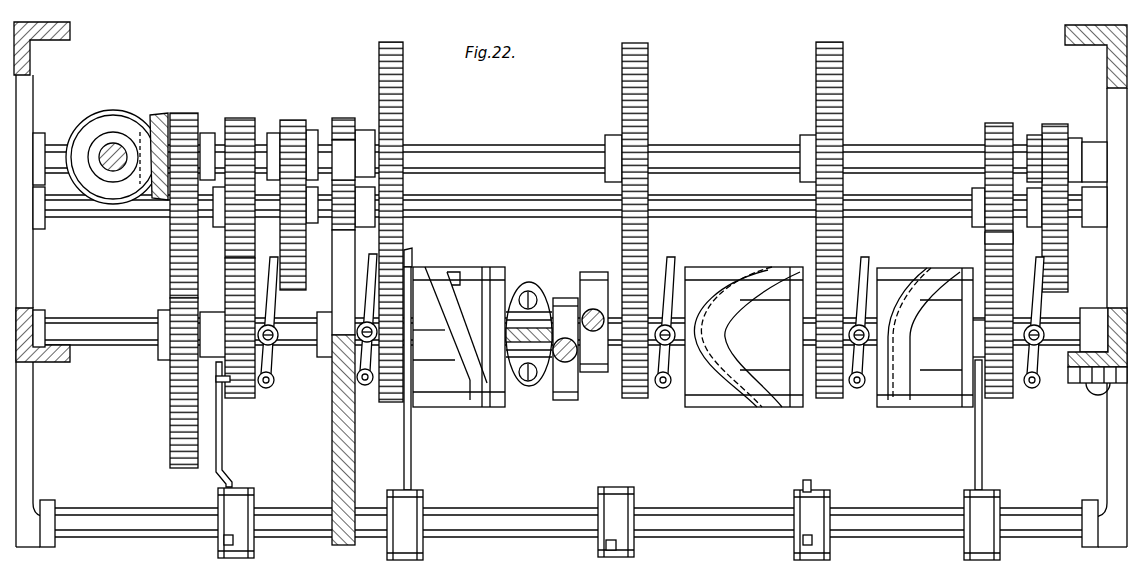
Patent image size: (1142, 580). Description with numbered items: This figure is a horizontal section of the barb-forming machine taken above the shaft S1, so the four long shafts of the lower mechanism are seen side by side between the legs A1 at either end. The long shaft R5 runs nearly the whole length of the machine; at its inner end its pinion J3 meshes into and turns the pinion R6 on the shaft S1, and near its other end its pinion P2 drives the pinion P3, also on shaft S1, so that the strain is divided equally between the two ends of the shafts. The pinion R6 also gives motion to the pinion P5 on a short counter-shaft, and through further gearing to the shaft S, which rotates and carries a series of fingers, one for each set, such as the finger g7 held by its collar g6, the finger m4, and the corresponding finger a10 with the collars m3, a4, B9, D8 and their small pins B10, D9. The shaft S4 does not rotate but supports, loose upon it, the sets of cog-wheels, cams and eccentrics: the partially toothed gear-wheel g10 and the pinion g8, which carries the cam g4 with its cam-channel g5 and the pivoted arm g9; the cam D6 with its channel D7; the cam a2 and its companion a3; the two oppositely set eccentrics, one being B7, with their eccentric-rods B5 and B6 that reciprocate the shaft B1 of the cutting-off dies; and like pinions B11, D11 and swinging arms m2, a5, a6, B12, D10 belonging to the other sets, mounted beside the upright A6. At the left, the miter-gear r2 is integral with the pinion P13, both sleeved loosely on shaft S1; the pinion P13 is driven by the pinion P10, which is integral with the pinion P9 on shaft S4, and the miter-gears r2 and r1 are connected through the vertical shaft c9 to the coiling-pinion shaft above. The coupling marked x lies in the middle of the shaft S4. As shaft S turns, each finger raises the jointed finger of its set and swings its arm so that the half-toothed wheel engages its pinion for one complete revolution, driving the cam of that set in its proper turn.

The legs A1 is at (72, 42).
The shaft R5 is at (50, 135).
The vertical shaft c9 is at (113, 150).
The miter-gear r1 is at (109, 171).
The miter-gear r2 is at (165, 122).
The pinion P13 is at (200, 118).
The pinion P10 is at (170, 378).
The pinion P5 is at (226, 242).
The pinion P9 is at (226, 300).
The pinion J3 is at (292, 120).
The pinion R6 is at (335, 125).
The frame post A6 is at (320, 405).
The shaft S1 is at (502, 218).
The shaft S4 is at (108, 326).
The shaft S is at (123, 516).
The gear B11 is at (632, 400).
The gear D11 is at (826, 400).
The pinion g8 is at (1005, 400).
The pinion P3 is at (1060, 124).
The pinion P2 is at (1033, 135).
The gear-wheel g10 is at (985, 242).
The cam a2 is at (459, 337).
The cam a3 is at (462, 365).
The section line x is at (534, 388).
The shaft B1 is at (565, 402).
The eccentric-rod B6 is at (567, 274).
The eccentric B7 is at (593, 372).
The eccentric-rod B5 is at (597, 267).
The channel D7 is at (744, 337).
The cam D6 is at (765, 335).
The cam-channel g5 is at (925, 337).
The cam g4 is at (941, 335).
The lever m2 is at (275, 379).
The lever a5 is at (365, 390).
The arm a6 is at (402, 395).
The lever B12 is at (663, 390).
The lever D10 is at (858, 390).
The arm g9 is at (1036, 390).
The finger m4 is at (226, 460).
The slide block m3 is at (236, 523).
The rod a10 is at (411, 460).
The slide block a4 is at (405, 525).
The slide block B9 is at (616, 522).
The pin B10 is at (606, 545).
The slide block D8 is at (812, 525).
The pin D9 is at (812, 487).
The finger g7 is at (983, 455).
The collar g6 is at (982, 525).